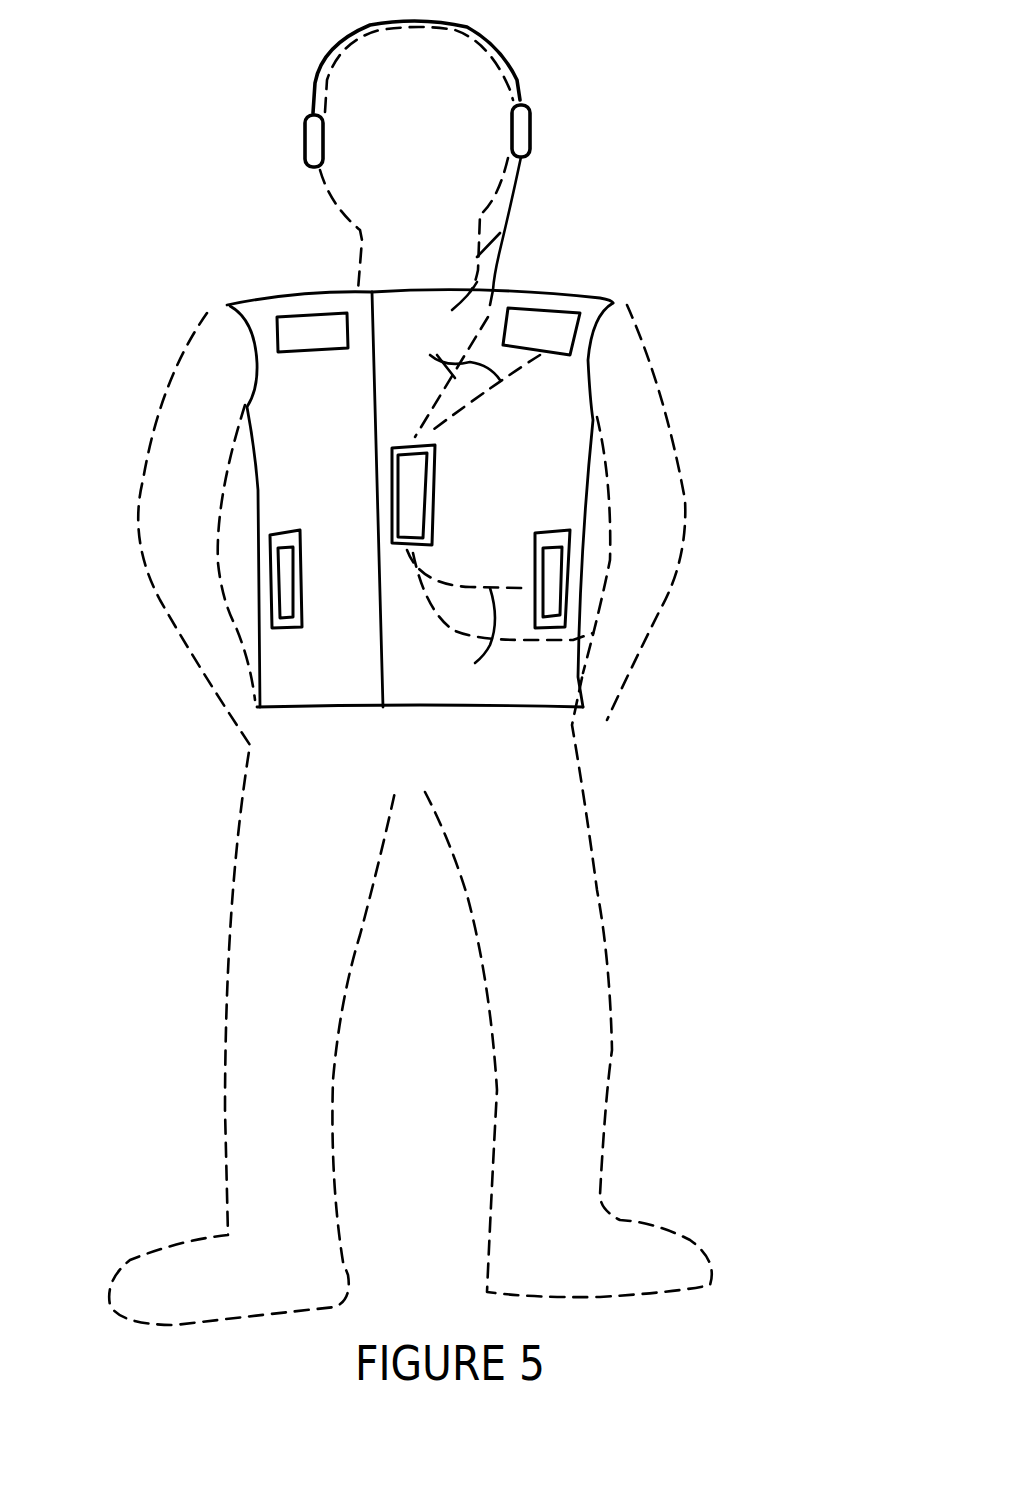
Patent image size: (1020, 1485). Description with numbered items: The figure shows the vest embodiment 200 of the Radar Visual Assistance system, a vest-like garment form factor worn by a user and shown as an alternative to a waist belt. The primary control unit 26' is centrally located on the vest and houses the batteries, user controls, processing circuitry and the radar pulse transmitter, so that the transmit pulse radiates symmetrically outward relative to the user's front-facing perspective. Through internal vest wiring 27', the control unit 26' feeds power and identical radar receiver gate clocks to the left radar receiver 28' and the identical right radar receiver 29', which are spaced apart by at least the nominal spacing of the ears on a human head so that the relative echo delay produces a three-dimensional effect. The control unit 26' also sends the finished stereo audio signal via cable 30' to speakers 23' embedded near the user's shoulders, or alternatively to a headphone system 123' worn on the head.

The vest embodiment 200 is at (97, 230).
The headphone system 123' is at (507, 165).
The speakers 23' is at (424, 293).
The cable 30' is at (433, 368).
The primary control unit 26' is at (441, 495).
The internal vest wiring 27' is at (430, 621).
The right radar receiver 29' is at (206, 592).
The left radar receiver 28' is at (632, 579).